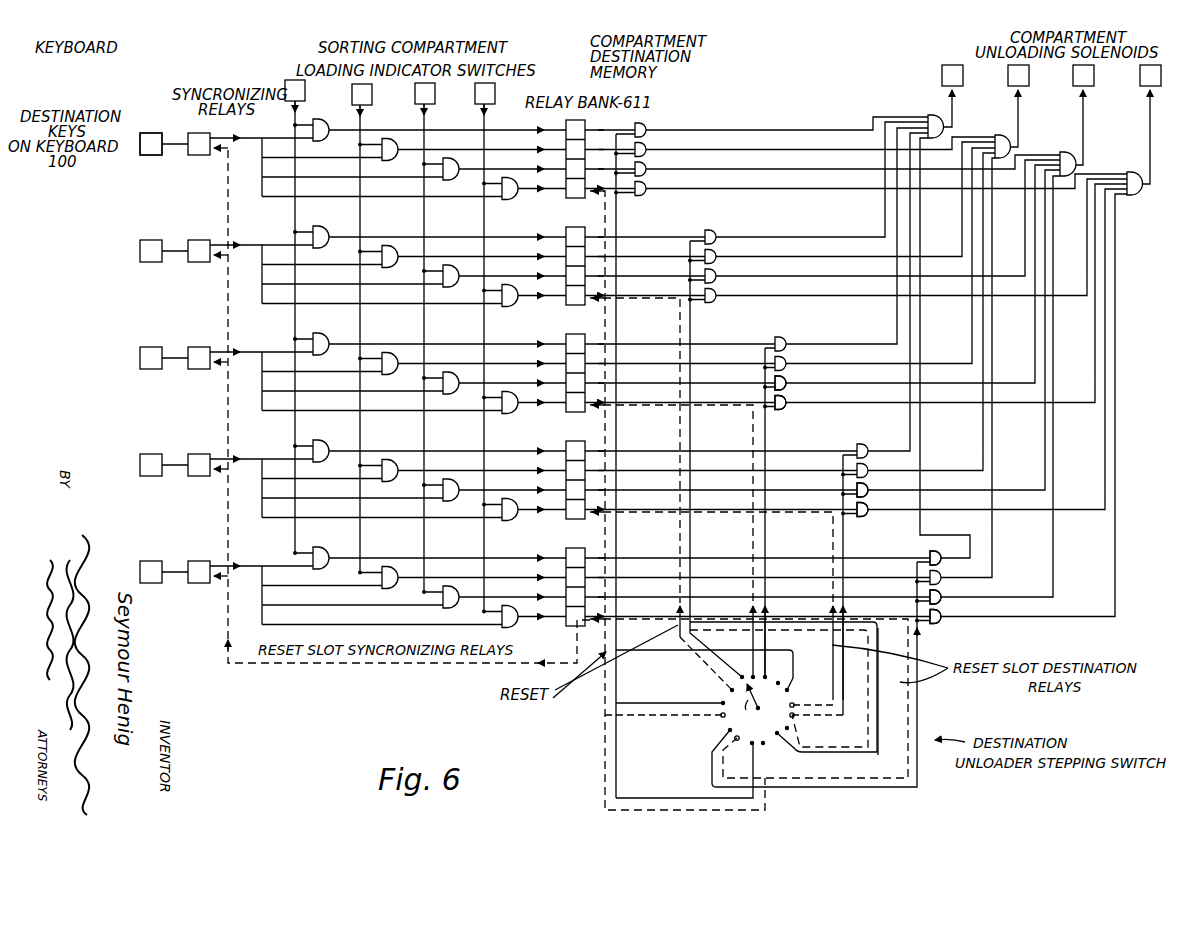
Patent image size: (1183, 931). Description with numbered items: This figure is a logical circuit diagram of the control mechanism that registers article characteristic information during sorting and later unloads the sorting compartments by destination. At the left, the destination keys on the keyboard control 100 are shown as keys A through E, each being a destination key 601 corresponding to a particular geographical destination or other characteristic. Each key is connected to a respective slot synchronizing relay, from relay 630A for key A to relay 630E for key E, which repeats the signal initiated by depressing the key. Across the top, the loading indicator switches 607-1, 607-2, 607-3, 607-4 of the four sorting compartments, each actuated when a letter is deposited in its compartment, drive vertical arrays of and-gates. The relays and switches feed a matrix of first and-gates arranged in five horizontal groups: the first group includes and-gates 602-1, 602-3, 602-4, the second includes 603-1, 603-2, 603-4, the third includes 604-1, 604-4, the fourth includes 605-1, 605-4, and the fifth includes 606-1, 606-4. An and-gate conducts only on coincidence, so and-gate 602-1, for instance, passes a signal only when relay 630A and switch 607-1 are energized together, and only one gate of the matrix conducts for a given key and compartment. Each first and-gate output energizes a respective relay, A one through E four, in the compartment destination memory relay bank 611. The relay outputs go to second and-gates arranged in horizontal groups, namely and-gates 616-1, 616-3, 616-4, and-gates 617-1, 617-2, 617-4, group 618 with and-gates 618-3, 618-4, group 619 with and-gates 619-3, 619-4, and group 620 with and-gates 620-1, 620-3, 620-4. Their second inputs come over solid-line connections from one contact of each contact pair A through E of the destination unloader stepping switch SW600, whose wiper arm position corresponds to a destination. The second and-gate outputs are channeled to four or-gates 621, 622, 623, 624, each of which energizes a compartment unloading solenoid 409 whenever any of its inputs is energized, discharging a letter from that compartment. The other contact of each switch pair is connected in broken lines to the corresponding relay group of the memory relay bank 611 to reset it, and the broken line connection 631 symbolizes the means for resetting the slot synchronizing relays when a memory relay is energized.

The keyboard control 100 is at (140, 118).
The destination key 601 is at (153, 155).
The slot synchronizing relay 630A is at (190, 118).
The slot synchronizing relay 630E is at (195, 583).
The loading indicator switch 607-1 is at (306, 94).
The loading indicator switch 607-2 is at (374, 108).
The loading indicator switch 607-3 is at (438, 108).
The loading indicator switch 607-4 is at (496, 92).
The logical and-gate 602-1 is at (311, 126).
The logical and-gate 602-3 is at (452, 178).
The logical and-gate 602-4 is at (502, 201).
The logical and-gate 603-1 is at (350, 218).
The logical and-gate 603-2 is at (392, 268).
The logical and-gate 603-4 is at (502, 309).
The logical and-gate 604-1 is at (350, 325).
The logical and-gate 604-4 is at (502, 415).
The logical and-gate 605-1 is at (350, 432).
The logical and-gate 605-4 is at (502, 523).
The logical and-gate 606-1 is at (350, 539).
The logical and-gate 606-4 is at (520, 623).
The compartment destination memory relay bank 611 is at (575, 100).
The second logical and-gate 616-1 is at (647, 125).
The second logical and-gate 616-3 is at (650, 161).
The second logical and-gate 616-4 is at (650, 181).
The second logical and-gate 617-1 is at (716, 228).
The second logical and-gate 617-2 is at (723, 247).
The second logical and-gate 617-4 is at (723, 287).
The second logical and-gates 618 is at (786, 334).
The second logical and-gate 618-3 is at (790, 373).
The second logical and-gate 618-4 is at (790, 410).
The second logical and-gates 619 is at (866, 444).
The second logical and-gate 619-3 is at (868, 483).
The second logical and-gate 619-4 is at (868, 513).
The second logical and-gates 620 is at (924, 550).
The second logical and-gate 620-1 is at (942, 560).
The second logical and-gate 620-3 is at (945, 589).
The second logical and-gate 620-4 is at (940, 622).
The logical or-gate 621 is at (931, 108).
The logical or-gate 622 is at (1000, 130).
The logical or-gate 623 is at (1068, 145).
The logical or-gate 624 is at (1137, 163).
The compartment unloading solenoid 409 is at (945, 64).
The broken line connection 631 is at (290, 668).
The destination unloader stepping switch SW600 is at (778, 730).